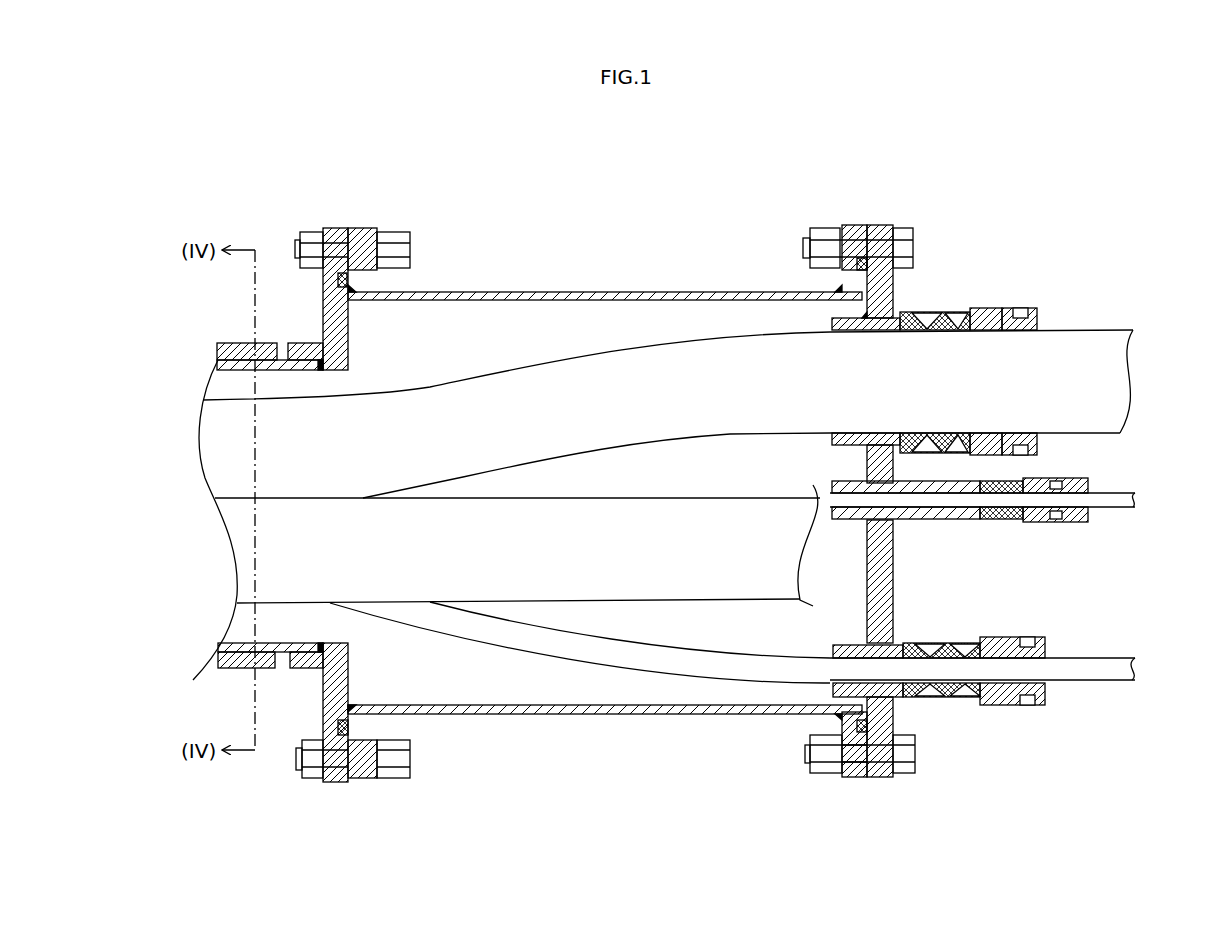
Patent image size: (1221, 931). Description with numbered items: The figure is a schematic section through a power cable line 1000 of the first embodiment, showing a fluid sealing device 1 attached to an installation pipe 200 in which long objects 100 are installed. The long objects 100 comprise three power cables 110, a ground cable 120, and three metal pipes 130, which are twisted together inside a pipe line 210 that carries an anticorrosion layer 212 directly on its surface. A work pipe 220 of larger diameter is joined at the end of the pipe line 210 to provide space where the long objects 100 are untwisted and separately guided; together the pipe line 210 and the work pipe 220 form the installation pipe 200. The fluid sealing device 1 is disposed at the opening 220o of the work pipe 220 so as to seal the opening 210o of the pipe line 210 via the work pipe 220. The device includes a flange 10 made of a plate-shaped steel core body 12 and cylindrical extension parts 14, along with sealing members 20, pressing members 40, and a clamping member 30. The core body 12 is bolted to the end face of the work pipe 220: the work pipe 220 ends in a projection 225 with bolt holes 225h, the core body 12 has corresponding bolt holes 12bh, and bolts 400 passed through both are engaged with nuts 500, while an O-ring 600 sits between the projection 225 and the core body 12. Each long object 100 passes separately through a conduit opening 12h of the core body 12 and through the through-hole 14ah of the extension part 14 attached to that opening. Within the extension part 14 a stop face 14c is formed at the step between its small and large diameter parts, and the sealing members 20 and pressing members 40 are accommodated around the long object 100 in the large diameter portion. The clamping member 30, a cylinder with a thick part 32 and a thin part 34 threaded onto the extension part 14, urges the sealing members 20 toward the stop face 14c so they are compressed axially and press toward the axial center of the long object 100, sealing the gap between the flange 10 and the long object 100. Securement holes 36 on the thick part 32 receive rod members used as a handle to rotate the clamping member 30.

The fluid sealing device 1 is at (1040, 300).
The flange 10 is at (960, 205).
The core body 12 is at (890, 300).
The conduit opening 12h is at (867, 693).
The bolt hole 12bh is at (890, 753).
The extension part 14 is at (893, 327).
The through-hole 14ah is at (893, 645).
The stop face 14c is at (930, 640).
The sealing member 20 is at (955, 314).
The clamping member 30 is at (1060, 226).
The thick part 32 is at (1012, 310).
The thin part 34 is at (988, 310).
The securement hole 36 is at (1030, 707).
The pressing member 40 is at (990, 638).
The long object 100 is at (684, 520).
The power cable 110 is at (558, 533).
The ground cable 120 is at (1097, 499).
The metal pipe 130 is at (637, 663).
The installation pipe 200 is at (653, 504).
The pipe line 210 is at (243, 362).
The opening of pipe line 210o is at (318, 380).
The anticorrosion layer 212 is at (258, 343).
The work pipe 220 is at (620, 292).
The opening of work pipe 220o is at (866, 302).
The projection 225 is at (858, 238).
The bolt hole 225h is at (840, 770).
The bolt 400 is at (902, 245).
The nut 500 is at (825, 240).
The O-ring 600 is at (862, 265).
The power cable line 1000 is at (287, 262).